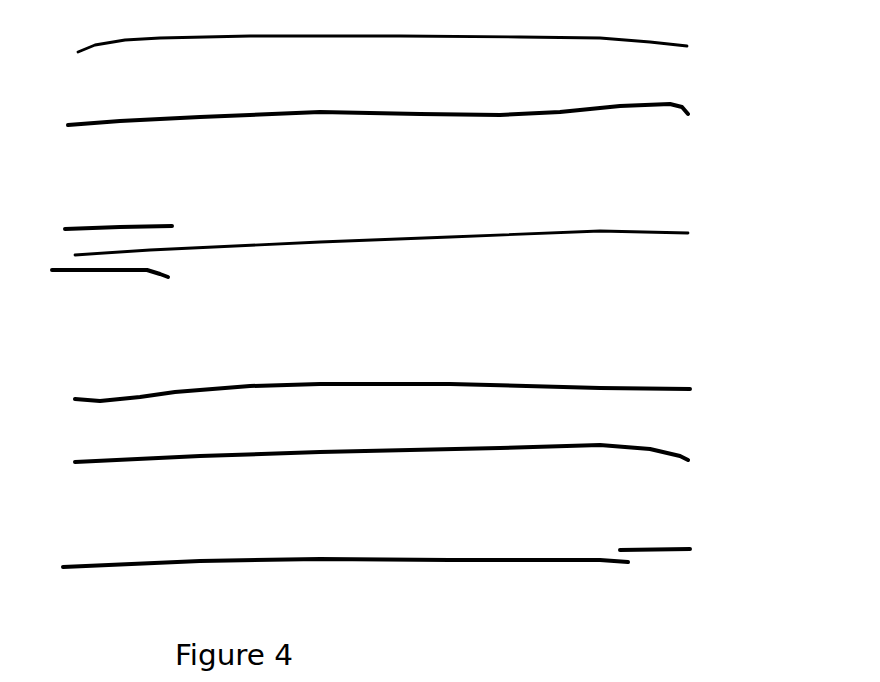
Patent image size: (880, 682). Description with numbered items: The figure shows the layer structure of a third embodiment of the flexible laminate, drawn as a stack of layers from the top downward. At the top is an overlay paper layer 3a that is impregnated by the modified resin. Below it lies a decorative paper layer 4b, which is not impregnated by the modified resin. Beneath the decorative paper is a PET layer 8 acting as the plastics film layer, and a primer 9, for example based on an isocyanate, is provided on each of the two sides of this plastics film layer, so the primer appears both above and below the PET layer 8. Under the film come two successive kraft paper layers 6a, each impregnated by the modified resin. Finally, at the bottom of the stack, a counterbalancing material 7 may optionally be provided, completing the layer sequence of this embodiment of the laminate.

The overlay paper layer 3a is at (687, 45).
The decorative paper layer 4b is at (690, 108).
The primer 9 is at (168, 226).
The PET layer 8 is at (688, 233).
The kraft paper layers 6a is at (690, 389).
The counterbalancing material 7 is at (690, 549).